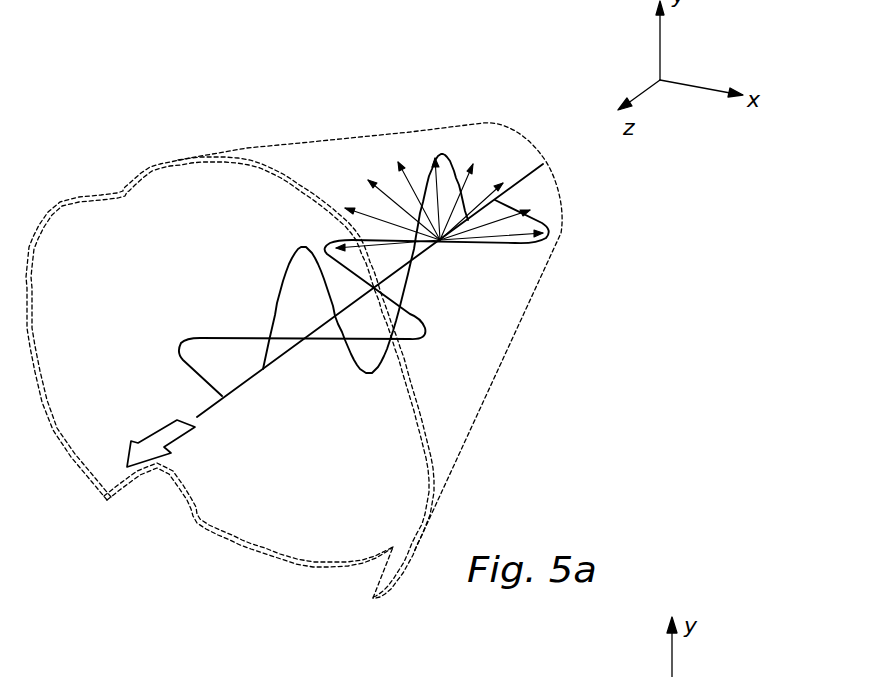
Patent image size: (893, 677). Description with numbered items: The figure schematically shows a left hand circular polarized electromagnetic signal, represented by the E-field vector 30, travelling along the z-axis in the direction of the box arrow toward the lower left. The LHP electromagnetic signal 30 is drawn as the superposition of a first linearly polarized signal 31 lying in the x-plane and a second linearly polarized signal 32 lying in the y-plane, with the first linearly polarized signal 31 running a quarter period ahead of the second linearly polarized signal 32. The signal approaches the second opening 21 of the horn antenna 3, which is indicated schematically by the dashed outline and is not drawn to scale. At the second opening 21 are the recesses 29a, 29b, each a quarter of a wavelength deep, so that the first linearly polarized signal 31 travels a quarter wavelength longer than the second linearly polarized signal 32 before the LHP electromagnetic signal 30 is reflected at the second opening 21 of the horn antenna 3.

The horn antenna 3 is at (300, 94).
The second opening 21 is at (262, 520).
The recess 29a is at (192, 182).
The recess 29b is at (338, 587).
The E-field vector 30 is at (407, 178).
The first linearly polarized signal 31 is at (421, 330).
The second linearly polarized signal 32 is at (278, 277).